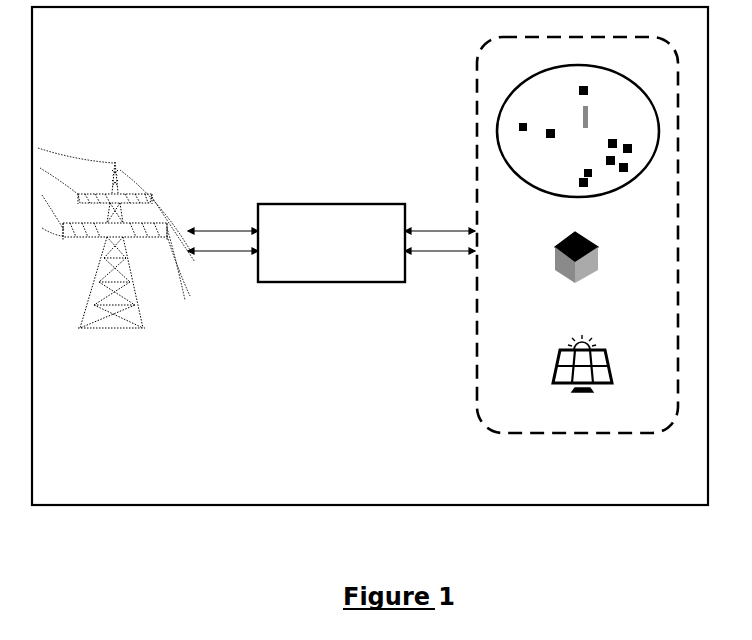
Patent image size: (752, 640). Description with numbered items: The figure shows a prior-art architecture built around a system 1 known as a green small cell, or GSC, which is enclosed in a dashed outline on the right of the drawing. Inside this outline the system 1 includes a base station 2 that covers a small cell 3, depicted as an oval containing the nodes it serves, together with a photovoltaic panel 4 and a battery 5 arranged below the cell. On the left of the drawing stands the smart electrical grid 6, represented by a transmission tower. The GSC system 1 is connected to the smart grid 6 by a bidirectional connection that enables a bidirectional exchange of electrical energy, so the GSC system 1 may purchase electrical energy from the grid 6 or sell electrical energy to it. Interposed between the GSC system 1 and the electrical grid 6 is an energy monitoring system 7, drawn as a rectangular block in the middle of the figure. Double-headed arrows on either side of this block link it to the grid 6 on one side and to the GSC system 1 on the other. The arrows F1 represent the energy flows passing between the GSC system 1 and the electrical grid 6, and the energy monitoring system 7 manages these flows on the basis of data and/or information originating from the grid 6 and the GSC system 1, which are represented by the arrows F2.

The system 1 is at (478, 378).
The base station 2 is at (585, 133).
The small cell 3 is at (627, 187).
The photovoltaic panel 4 is at (598, 370).
The battery 5 is at (590, 268).
The smart electrical grid 6 is at (122, 313).
The energy monitoring system 7 is at (313, 268).
The energy flows F1 is at (212, 253).
The data and/or information flows F2 is at (217, 230).